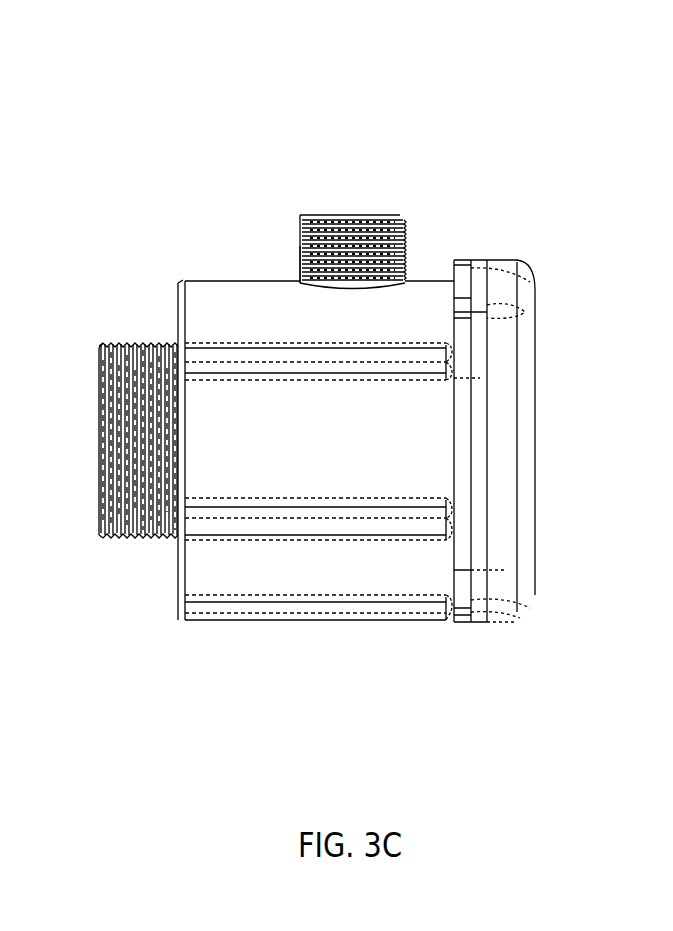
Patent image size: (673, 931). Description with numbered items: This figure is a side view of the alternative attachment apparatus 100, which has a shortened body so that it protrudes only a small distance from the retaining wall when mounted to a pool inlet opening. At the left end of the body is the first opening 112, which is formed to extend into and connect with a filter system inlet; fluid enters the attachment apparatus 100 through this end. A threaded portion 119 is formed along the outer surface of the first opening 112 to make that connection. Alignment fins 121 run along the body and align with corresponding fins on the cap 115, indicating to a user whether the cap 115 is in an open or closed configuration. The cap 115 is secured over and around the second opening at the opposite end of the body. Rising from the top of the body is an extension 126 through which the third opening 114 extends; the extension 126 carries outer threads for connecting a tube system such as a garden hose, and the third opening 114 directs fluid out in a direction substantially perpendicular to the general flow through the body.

The attachment apparatus 100 is at (329, 130).
The first opening 112 is at (94, 483).
The third opening 114 is at (366, 208).
The cap 115 is at (533, 595).
The threaded portion 119 is at (147, 352).
The alignment fins 121 is at (253, 522).
The extension 126 is at (300, 248).